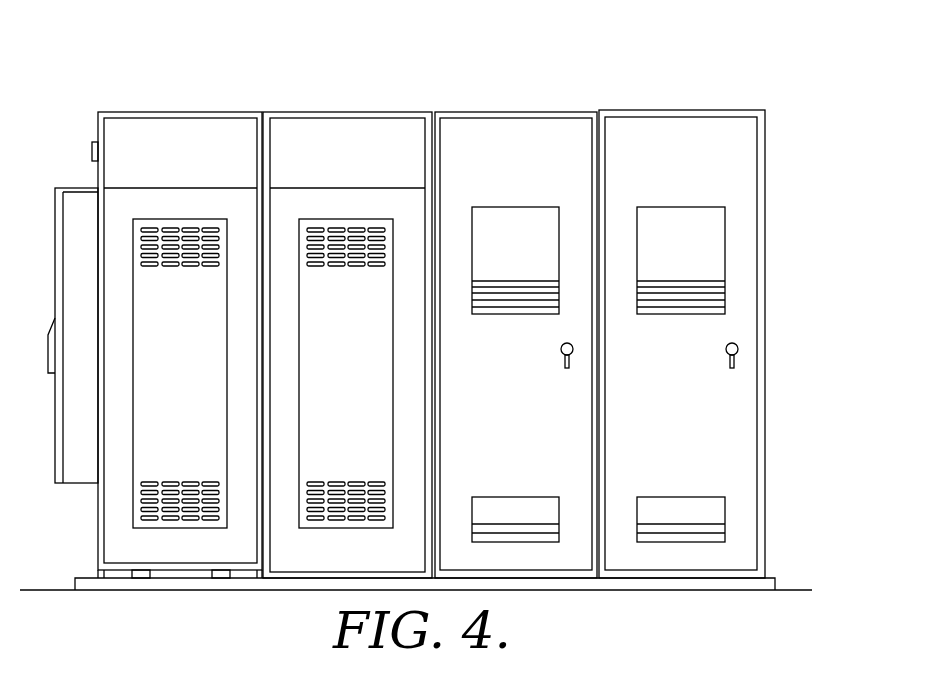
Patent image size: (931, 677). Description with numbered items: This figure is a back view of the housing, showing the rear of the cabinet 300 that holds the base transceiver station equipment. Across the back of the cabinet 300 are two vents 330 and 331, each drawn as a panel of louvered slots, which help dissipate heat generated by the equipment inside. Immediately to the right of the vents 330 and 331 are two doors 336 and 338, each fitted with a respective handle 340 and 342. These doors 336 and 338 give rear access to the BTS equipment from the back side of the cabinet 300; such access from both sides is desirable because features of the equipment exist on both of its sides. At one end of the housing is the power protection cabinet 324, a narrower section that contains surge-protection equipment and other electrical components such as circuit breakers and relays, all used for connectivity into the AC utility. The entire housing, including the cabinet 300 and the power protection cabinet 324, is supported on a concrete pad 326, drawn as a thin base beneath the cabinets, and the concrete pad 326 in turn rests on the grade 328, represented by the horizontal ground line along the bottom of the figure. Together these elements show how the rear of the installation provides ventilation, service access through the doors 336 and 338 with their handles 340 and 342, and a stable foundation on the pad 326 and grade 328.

The cabinet 300 is at (601, 75).
The power protection cabinet 324 is at (76, 483).
The concrete pad 326 is at (775, 588).
The grade 328 is at (668, 623).
The vent 330 is at (170, 266).
The vent 331 is at (336, 266).
The door 336 is at (516, 345).
The door 338 is at (682, 344).
The handle 340 is at (561, 349).
The handle 342 is at (726, 349).